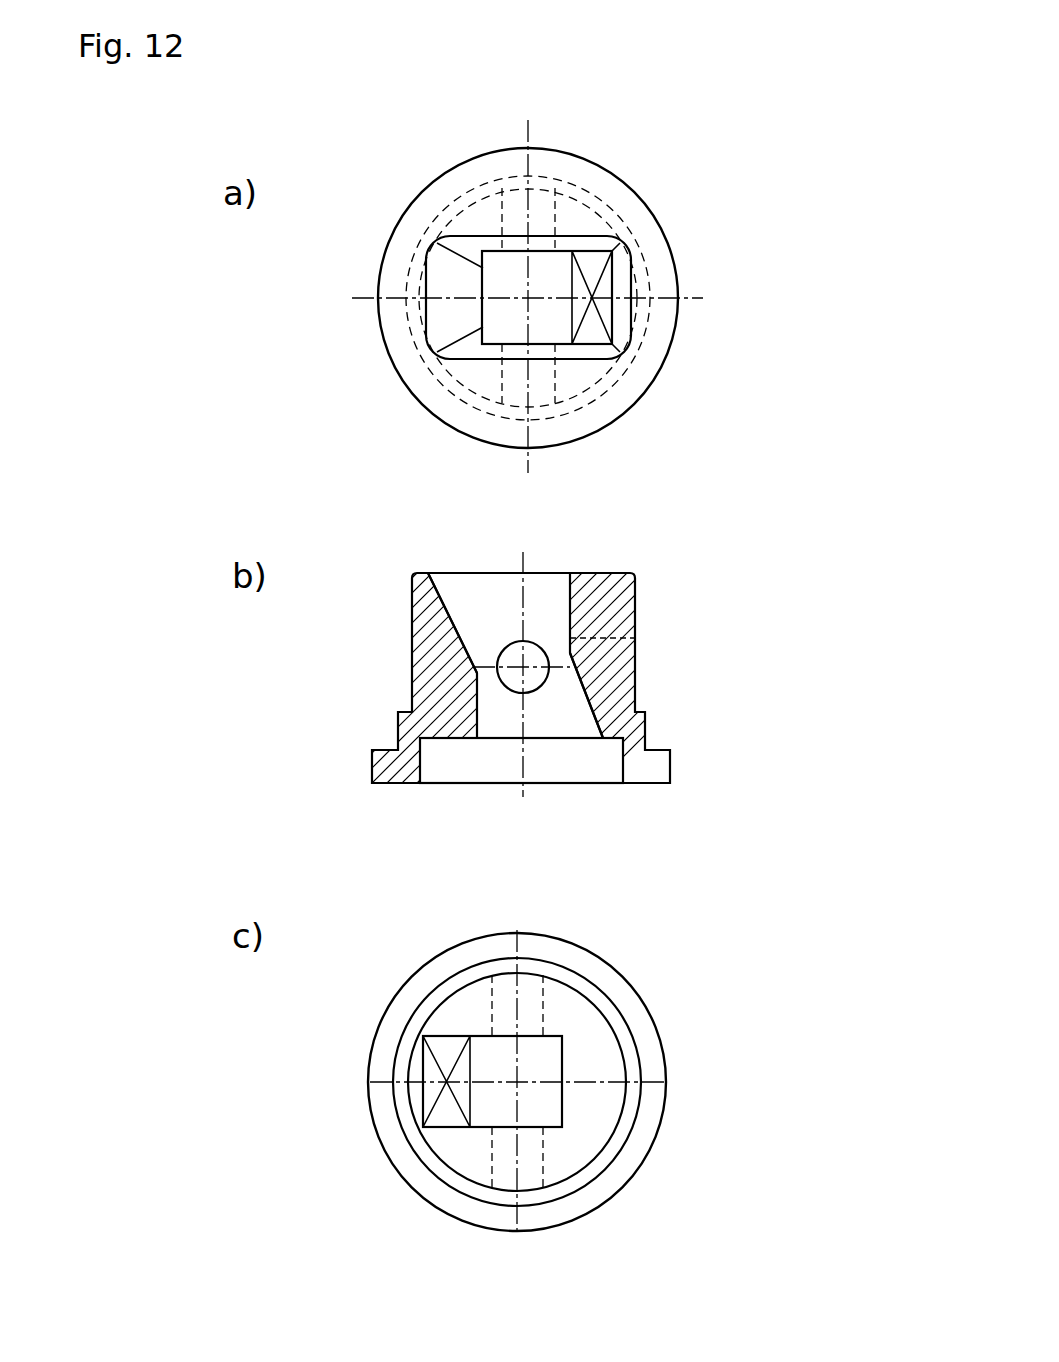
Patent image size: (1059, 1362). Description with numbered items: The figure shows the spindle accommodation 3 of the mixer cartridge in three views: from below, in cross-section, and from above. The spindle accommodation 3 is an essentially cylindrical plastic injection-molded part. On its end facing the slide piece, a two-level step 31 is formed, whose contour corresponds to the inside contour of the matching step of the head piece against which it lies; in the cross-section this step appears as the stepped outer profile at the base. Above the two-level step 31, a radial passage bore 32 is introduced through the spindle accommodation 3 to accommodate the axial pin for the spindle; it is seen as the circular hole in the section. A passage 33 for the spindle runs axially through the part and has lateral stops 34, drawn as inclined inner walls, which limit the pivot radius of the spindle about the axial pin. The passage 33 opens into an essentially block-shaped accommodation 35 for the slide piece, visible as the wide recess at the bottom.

The spindle accommodation 3 is at (708, 90).
The two-level step 31 is at (646, 716).
The radial passage bore 32 is at (535, 655).
The passage 33 is at (505, 326).
The lateral stops 34 is at (453, 615).
The block-shaped accommodation 35 is at (467, 247).